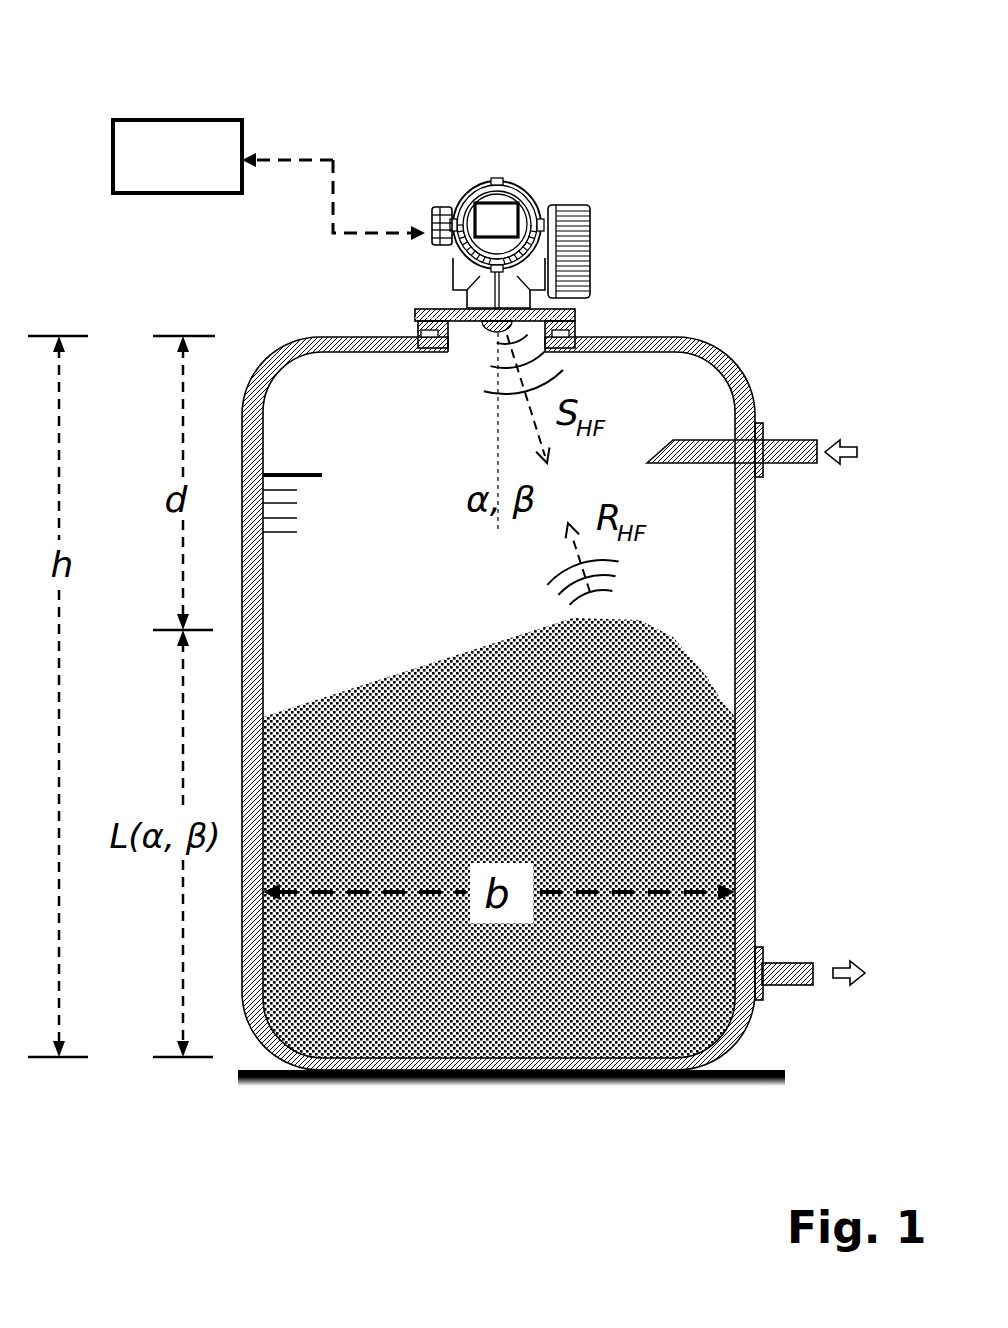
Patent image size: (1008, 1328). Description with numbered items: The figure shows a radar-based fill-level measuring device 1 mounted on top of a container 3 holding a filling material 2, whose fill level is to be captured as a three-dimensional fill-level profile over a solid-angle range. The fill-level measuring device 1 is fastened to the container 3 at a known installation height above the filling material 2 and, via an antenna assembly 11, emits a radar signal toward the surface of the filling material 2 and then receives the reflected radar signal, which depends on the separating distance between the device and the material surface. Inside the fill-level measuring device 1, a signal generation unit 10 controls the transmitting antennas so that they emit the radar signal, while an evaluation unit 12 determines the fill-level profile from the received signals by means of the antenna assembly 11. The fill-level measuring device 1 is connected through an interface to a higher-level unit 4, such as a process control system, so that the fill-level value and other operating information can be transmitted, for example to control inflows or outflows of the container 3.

The fill-level measuring device 1 is at (455, 142).
The filling material 2 is at (496, 779).
The container 3 is at (755, 767).
The higher-level unit 4 is at (189, 184).
The signal generation unit 10 is at (498, 215).
The antenna assembly 11 is at (493, 327).
The evaluation unit 12 is at (547, 233).